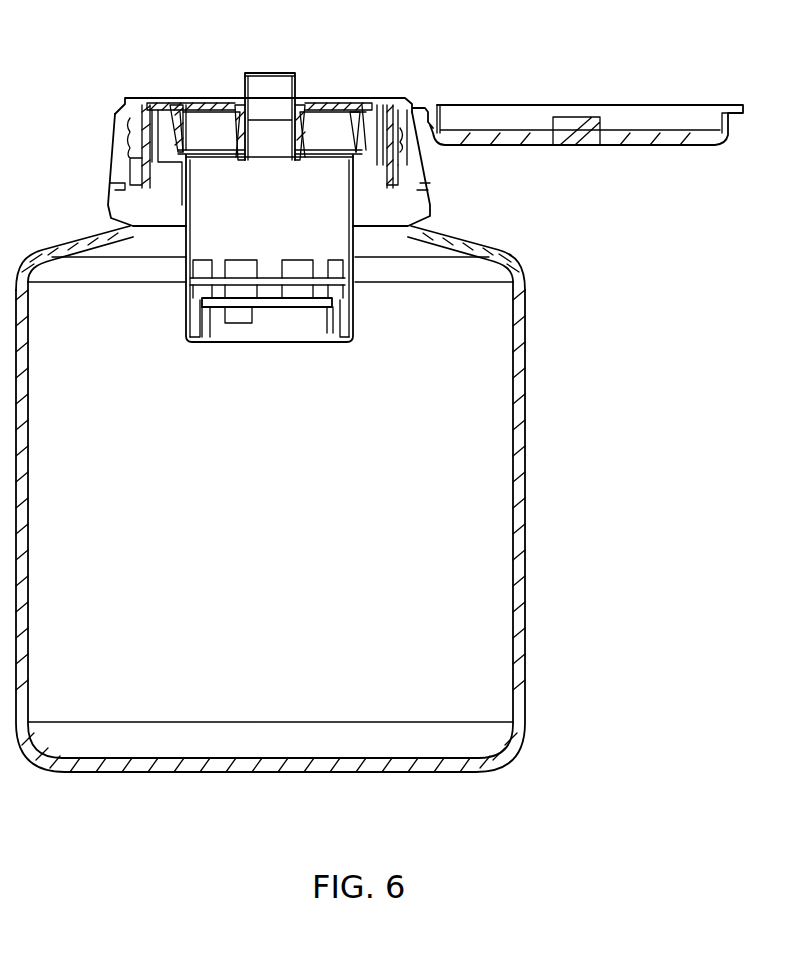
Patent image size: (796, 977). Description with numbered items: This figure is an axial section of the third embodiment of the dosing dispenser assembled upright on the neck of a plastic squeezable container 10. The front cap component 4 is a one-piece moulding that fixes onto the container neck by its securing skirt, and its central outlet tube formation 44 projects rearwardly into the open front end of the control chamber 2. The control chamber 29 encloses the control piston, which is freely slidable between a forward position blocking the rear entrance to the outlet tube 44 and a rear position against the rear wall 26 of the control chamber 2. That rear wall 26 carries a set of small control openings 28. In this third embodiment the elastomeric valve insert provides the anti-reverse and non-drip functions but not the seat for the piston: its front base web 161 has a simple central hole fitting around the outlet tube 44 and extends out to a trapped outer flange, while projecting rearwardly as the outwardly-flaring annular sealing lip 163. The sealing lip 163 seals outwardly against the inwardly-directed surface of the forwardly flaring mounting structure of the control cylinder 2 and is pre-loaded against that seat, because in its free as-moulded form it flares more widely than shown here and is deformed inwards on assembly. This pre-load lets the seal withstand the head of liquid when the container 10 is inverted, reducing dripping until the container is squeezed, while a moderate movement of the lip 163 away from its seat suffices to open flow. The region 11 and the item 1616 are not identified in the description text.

The squeezable container 10 is at (523, 490).
The container interior 11 is at (283, 552).
The front cap component 4 is at (118, 137).
The front base web 161 is at (205, 103).
The central outlet tube formation 44 is at (250, 133).
The annular sealing lip 163 is at (347, 127).
The hinge 1616 is at (377, 103).
The control chamber 29 is at (279, 236).
The rear wall 26 is at (270, 307).
The control openings 28 is at (242, 315).
The control chamber 2 is at (182, 313).